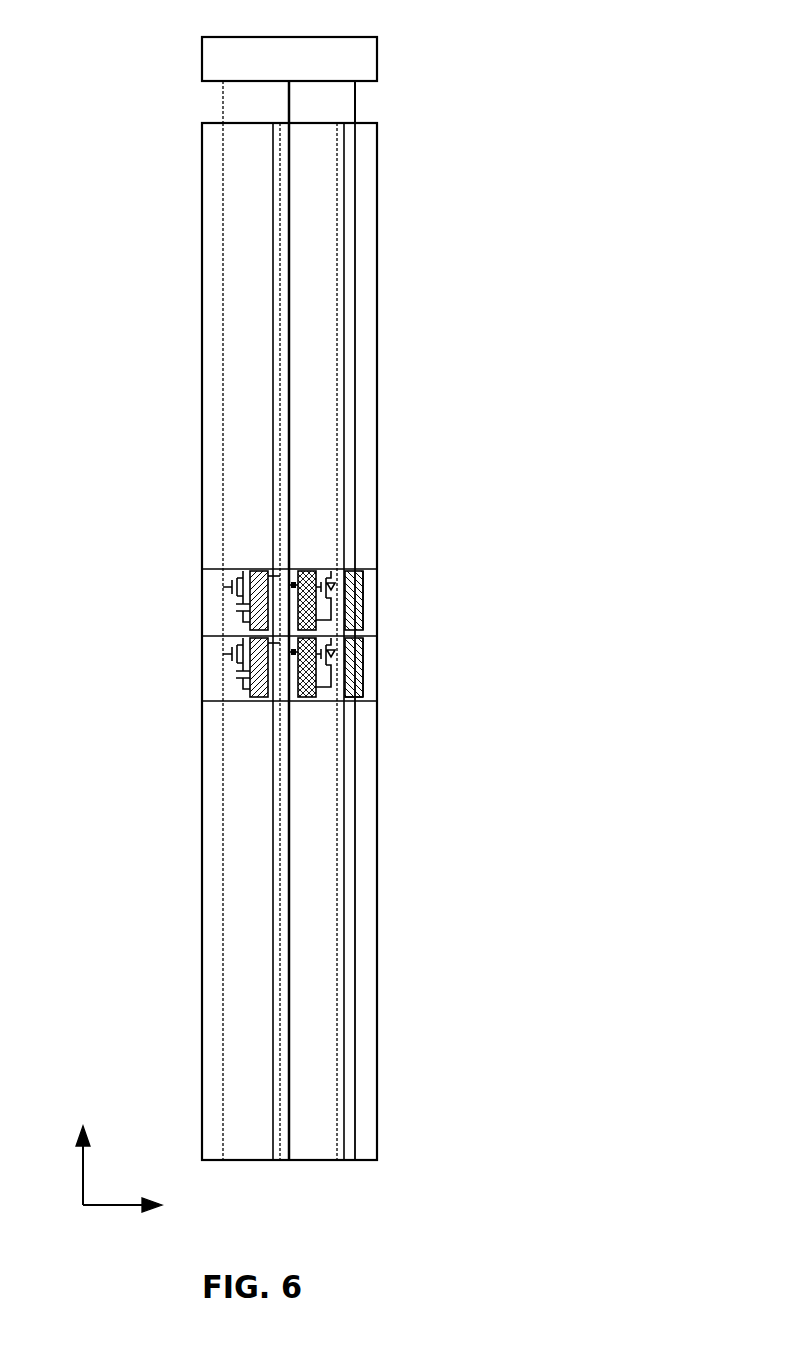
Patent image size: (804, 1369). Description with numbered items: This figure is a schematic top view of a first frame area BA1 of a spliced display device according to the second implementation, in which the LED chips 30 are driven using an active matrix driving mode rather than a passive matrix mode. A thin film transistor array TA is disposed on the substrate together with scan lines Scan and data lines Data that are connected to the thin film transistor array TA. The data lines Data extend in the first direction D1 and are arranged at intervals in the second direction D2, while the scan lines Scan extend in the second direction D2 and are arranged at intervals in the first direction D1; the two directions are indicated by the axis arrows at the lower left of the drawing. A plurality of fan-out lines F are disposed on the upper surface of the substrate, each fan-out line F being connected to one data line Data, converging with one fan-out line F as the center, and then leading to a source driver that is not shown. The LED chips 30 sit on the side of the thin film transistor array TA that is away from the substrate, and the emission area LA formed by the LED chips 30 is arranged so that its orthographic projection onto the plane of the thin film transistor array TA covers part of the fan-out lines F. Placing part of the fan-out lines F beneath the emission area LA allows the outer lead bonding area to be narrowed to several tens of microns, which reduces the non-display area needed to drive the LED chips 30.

The first frame area BA1 is at (372, 326).
The scan line Scan is at (355, 208).
The data line Data is at (217, 701).
The thin film transistor array TA is at (227, 569).
The emission area LA is at (356, 569).
The fan-out line F is at (360, 690).
The LED chip 30 is at (358, 690).
The first direction D1 is at (81, 1152).
The second direction D2 is at (136, 1206).